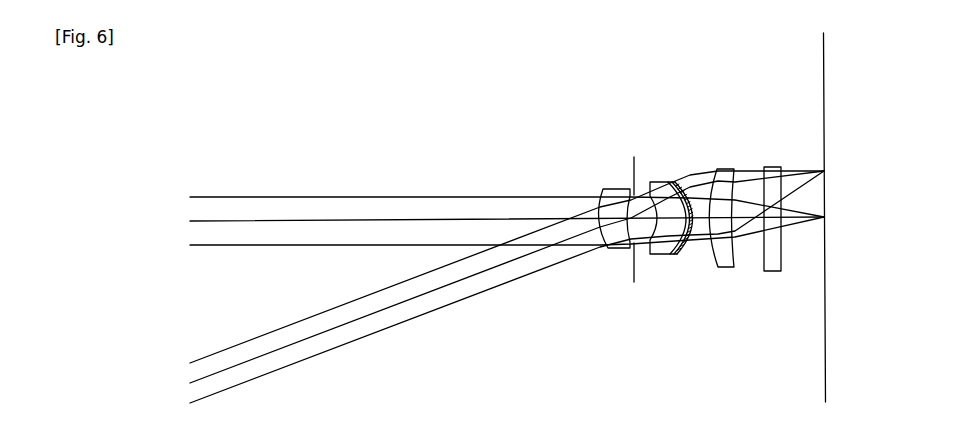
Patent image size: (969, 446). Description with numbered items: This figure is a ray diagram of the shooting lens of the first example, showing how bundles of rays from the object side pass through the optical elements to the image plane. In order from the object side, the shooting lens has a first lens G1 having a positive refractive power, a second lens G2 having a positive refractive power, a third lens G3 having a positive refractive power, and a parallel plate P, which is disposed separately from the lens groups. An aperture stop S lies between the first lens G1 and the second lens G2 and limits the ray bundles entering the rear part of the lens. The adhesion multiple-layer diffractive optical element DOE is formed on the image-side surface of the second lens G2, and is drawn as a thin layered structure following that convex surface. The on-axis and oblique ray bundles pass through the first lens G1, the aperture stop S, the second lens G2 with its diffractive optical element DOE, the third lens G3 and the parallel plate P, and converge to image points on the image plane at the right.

The first lens G1 is at (611, 188).
The aperture stop S is at (634, 157).
The second lens G2 is at (656, 182).
The adhesion multiple-layer diffractive optical element DOE is at (675, 181).
The third lens G3 is at (721, 169).
The parallel plate P is at (770, 167).